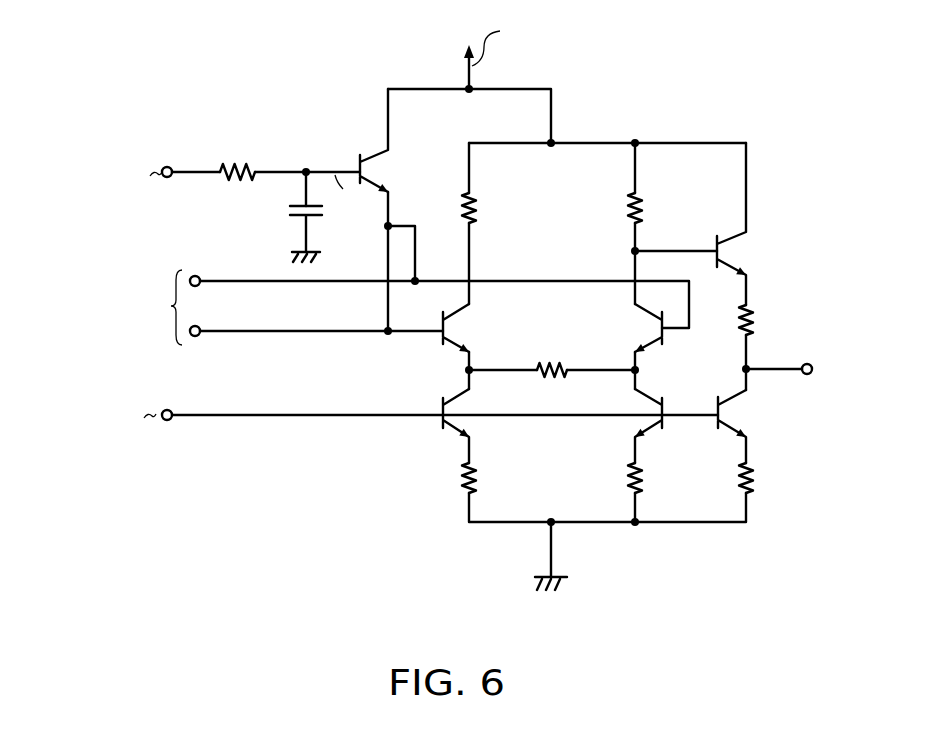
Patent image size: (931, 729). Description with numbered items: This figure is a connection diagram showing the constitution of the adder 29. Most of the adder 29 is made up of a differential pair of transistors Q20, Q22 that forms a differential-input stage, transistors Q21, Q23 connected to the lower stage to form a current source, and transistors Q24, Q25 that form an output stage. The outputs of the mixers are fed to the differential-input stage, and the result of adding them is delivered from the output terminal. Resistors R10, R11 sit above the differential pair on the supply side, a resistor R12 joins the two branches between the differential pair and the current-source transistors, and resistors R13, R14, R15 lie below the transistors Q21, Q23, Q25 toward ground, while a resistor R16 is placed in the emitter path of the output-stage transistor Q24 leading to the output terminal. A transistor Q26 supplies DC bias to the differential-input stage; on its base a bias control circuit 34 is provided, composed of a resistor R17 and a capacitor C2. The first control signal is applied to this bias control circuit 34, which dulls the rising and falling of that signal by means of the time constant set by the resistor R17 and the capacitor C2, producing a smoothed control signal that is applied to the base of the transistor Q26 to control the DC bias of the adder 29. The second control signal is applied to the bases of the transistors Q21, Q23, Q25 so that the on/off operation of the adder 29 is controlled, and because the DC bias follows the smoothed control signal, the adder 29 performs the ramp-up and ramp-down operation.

The adder 29 is at (457, 300).
The bias control circuit 34 is at (288, 133).
The resistor R17 is at (243, 158).
The capacitor C2 is at (286, 219).
The transistor Q26 is at (360, 162).
The resistor R10 is at (477, 206).
The resistor R11 is at (625, 206).
The transistor Q24 is at (717, 234).
The resistor R16 is at (760, 327).
The transistor Q20 is at (447, 330).
The transistor Q22 is at (658, 330).
The resistor R12 is at (557, 360).
The transistor Q21 is at (442, 427).
The transistor Q23 is at (662, 405).
The transistor Q25 is at (724, 410).
The resistor R13 is at (478, 483).
The resistor R14 is at (625, 480).
The resistor R15 is at (735, 480).